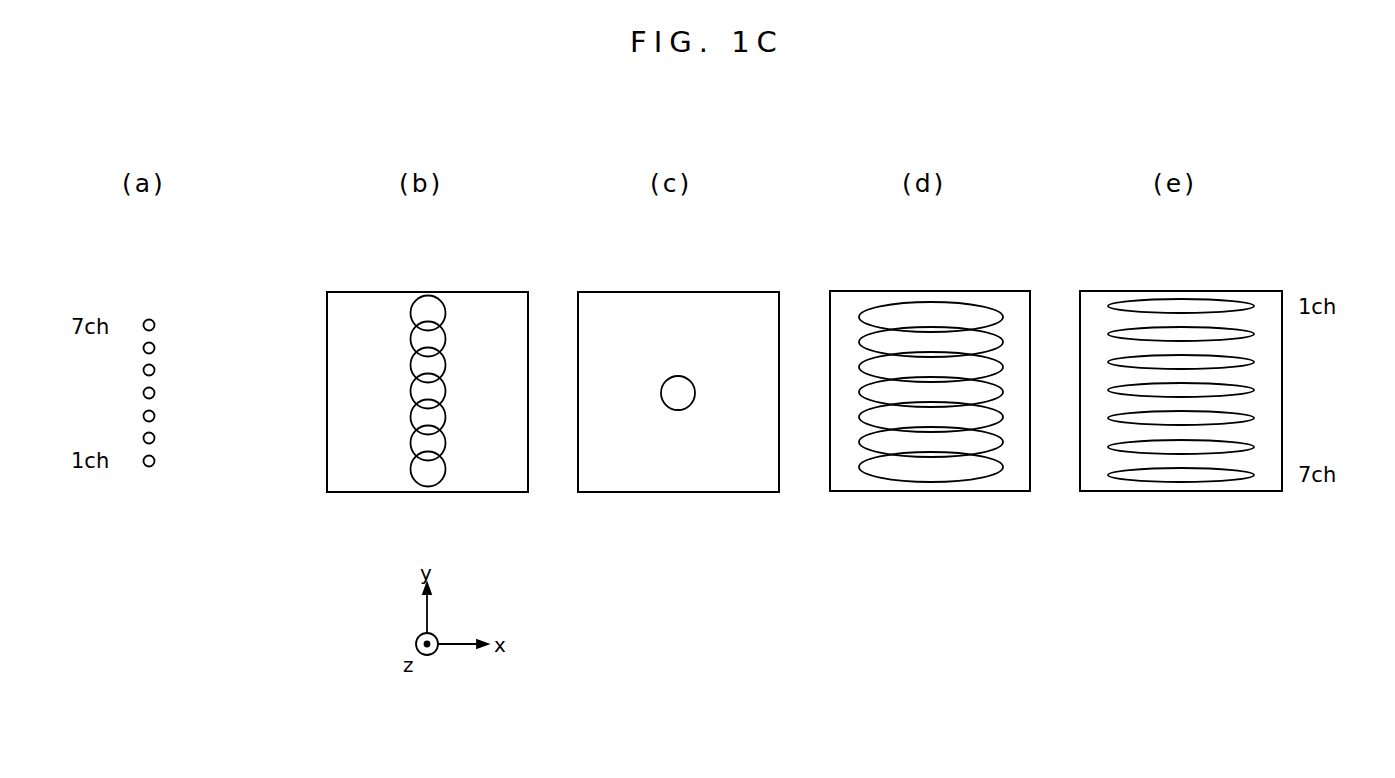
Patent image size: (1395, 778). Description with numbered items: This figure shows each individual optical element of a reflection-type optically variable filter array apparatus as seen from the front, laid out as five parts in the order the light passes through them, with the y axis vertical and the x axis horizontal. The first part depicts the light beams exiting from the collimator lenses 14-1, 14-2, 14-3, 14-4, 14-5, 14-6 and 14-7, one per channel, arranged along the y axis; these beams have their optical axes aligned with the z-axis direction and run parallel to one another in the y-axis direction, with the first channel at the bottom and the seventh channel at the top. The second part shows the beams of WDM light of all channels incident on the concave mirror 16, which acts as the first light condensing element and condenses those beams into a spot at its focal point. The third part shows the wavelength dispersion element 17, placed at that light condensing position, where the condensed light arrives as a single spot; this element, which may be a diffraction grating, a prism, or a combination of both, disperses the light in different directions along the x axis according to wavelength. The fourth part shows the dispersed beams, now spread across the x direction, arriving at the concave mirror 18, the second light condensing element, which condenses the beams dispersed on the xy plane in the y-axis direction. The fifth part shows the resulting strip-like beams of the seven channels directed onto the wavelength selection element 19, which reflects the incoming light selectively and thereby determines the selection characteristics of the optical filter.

The collimator lens 14-1 is at (152, 466).
The collimator lens 14-2 is at (156, 438).
The collimator lens 14-3 is at (156, 416).
The collimator lens 14-4 is at (156, 393).
The collimator lens 14-5 is at (156, 370).
The collimator lens 14-6 is at (157, 345).
The collimator lens 14-7 is at (155, 319).
The concave mirror 16 is at (433, 292).
The wavelength dispersion element 17 is at (685, 292).
The concave mirror 18 is at (935, 291).
The wavelength selection element 19 is at (1188, 291).